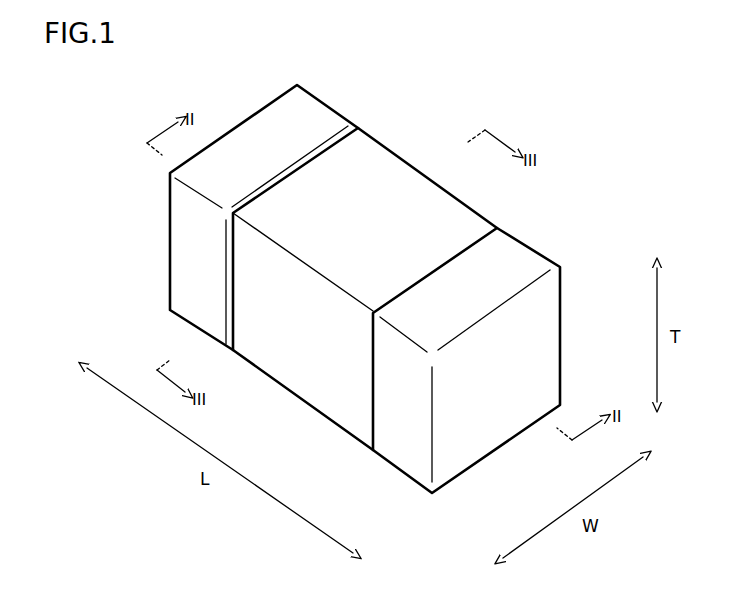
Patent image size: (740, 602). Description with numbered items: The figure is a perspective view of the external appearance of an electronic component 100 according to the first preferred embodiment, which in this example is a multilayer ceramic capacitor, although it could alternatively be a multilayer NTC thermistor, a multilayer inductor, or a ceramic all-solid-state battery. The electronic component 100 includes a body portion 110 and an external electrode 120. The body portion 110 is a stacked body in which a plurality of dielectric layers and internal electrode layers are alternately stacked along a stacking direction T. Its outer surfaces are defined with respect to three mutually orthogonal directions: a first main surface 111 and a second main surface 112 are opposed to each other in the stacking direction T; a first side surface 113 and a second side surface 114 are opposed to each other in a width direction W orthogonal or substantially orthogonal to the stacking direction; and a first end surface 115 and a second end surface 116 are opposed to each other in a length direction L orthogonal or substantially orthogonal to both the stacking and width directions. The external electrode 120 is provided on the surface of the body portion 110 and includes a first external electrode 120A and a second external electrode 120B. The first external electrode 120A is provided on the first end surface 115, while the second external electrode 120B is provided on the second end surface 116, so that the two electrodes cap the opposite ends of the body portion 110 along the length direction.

The electronic component 100 is at (367, 276).
The body portion 110 is at (319, 291).
The first main surface 111 is at (383, 183).
The second main surface 112 is at (343, 387).
The first side surface 113 is at (303, 360).
The second side surface 114 is at (450, 232).
The first end surface 115 is at (200, 262).
The second end surface 116 is at (493, 414).
The external electrode 120 is at (396, 274).
The first external electrode 120A is at (305, 117).
The second external electrode 120B is at (510, 268).